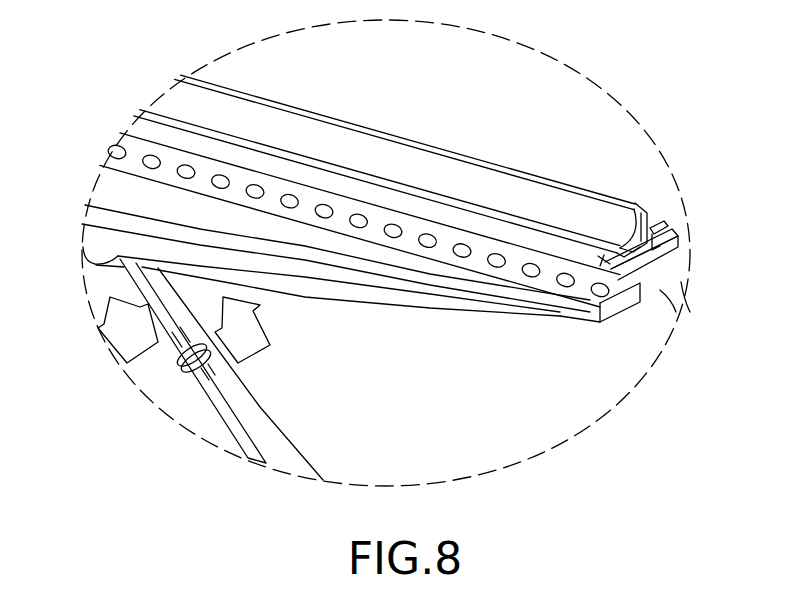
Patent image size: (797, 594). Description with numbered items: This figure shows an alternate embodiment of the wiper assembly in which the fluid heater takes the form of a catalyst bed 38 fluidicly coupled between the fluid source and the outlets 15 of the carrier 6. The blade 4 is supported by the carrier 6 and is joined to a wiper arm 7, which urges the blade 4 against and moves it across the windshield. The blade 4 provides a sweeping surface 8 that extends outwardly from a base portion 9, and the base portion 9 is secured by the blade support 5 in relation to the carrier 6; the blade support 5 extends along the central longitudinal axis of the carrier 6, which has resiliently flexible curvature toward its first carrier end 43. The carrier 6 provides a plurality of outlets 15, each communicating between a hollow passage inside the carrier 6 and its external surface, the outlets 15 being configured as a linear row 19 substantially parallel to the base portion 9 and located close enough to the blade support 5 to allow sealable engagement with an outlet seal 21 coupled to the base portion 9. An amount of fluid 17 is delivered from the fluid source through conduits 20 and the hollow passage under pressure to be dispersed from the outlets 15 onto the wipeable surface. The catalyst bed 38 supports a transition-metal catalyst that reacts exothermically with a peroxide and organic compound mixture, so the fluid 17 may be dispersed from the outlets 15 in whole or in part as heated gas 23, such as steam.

The blade 4 is at (552, 145).
The blade support 5 is at (640, 285).
The carrier 6 is at (647, 290).
The wiper arm 7 is at (273, 442).
The sweeping surface 8 is at (628, 194).
The base portion 9 is at (641, 262).
The outlets 15 is at (531, 276).
The fluid 17 is at (242, 330).
The linear row 19 is at (106, 148).
The conduits 20 is at (207, 398).
The outlet seal 21 is at (641, 226).
The heated gas 23 is at (128, 330).
The catalyst bed 38 is at (160, 363).
The first carrier end 43 is at (607, 323).